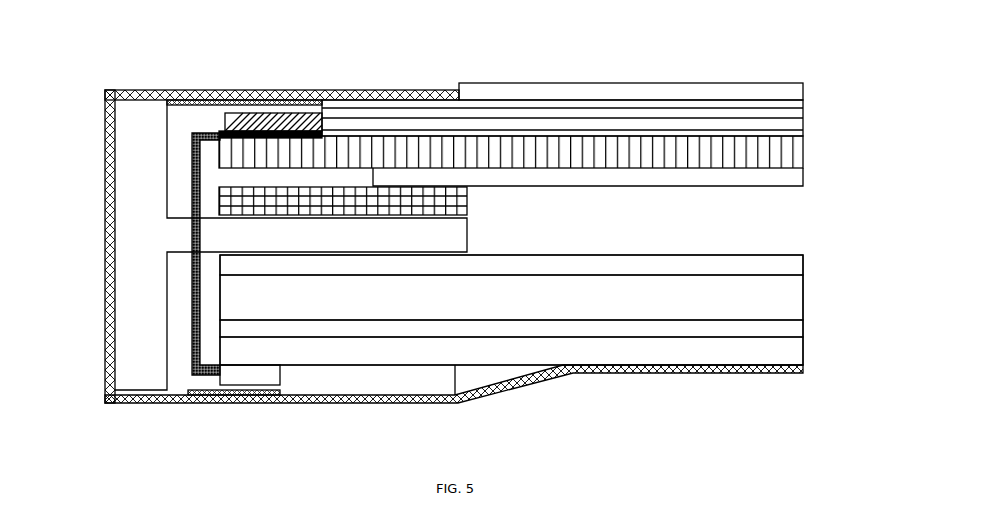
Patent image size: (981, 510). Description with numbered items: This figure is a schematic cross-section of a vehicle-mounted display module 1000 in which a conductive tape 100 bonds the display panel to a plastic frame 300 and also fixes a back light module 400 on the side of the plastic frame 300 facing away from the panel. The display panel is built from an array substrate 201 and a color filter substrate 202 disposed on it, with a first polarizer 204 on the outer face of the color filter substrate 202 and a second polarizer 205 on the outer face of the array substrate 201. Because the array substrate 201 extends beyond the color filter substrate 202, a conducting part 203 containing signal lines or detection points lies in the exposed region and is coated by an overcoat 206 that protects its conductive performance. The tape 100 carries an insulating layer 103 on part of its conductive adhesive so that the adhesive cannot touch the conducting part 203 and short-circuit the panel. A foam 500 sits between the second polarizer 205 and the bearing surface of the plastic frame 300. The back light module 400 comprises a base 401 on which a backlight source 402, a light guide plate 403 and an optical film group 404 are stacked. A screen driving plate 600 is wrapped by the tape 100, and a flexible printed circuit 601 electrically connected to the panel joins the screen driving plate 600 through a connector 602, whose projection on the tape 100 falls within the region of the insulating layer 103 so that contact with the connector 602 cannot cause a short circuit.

The vehicle-mounted display module 1000 is at (73, 22).
The tape 100 is at (108, 123).
The insulating layer 103 is at (197, 102).
The conducting part 203 is at (236, 133).
The overcoat 206 is at (277, 122).
The array substrate 201 is at (347, 150).
The color filter substrate 202 is at (367, 117).
The second polarizer 205 is at (435, 177).
The first polarizer 204 is at (485, 90).
The foam 500 is at (450, 205).
The plastic frame 300 is at (143, 272).
The back light module 400 is at (570, 308).
The optical film group 404 is at (790, 265).
The light guide plate 403 is at (790, 300).
The backlight source 402 is at (790, 327).
The base 401 is at (544, 353).
The flexible printed circuit 601 is at (193, 350).
The connector 602 is at (248, 378).
The screen driving plate 600 is at (362, 385).